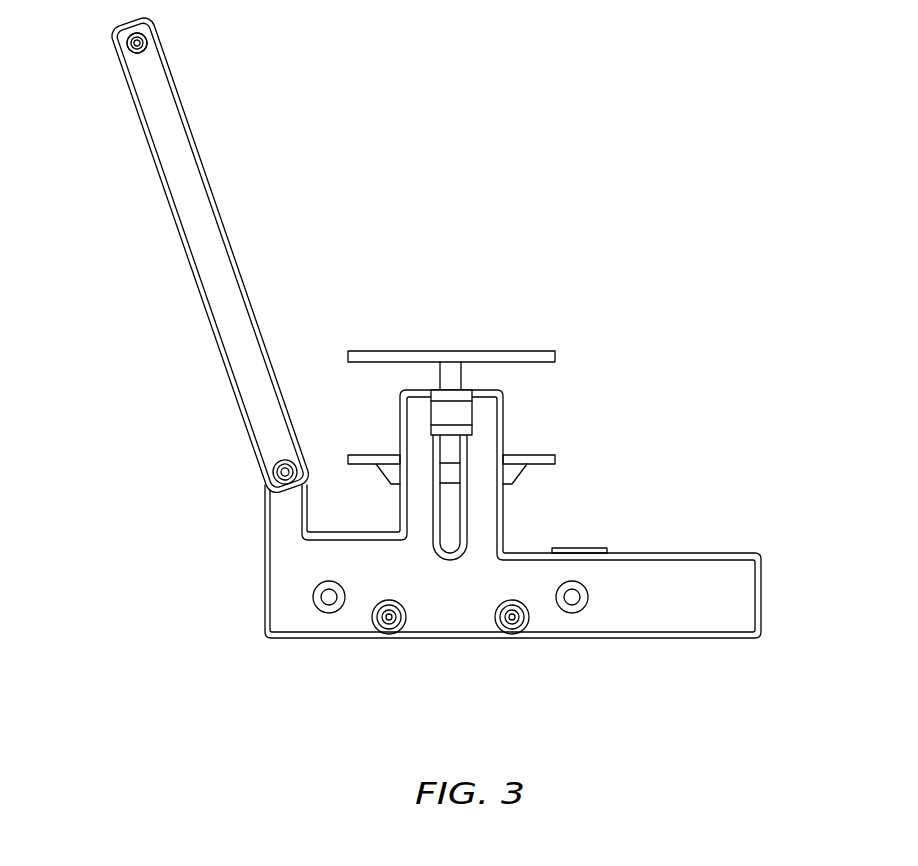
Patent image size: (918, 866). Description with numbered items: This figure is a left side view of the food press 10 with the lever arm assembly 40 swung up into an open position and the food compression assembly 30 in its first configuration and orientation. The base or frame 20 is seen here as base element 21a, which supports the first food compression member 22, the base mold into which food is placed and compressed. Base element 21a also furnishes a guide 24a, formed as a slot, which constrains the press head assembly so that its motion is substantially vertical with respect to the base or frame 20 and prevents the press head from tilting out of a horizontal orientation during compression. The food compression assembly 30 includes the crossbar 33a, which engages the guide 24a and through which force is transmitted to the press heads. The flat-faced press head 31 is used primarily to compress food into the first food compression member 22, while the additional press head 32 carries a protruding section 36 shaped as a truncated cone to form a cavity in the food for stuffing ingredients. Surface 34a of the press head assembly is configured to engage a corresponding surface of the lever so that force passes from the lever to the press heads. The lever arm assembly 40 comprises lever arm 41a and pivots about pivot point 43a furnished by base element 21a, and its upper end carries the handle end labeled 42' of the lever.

The food press 10 is at (634, 134).
The base or frame 20 is at (516, 547).
The base element 21a is at (678, 600).
The first food compression member 22 is at (585, 548).
The guide 24a is at (450, 542).
The food compression assembly 30 is at (491, 366).
The press head 31 is at (520, 351).
The press head 32 is at (540, 453).
The crossbar 33a is at (460, 413).
The surface 34a is at (456, 388).
The protruding section 36 is at (520, 478).
The lever arm assembly 40 is at (170, 269).
The lever arm 41a is at (170, 269).
The upper pivot 42' is at (103, 53).
The pivot point 43a is at (285, 472).